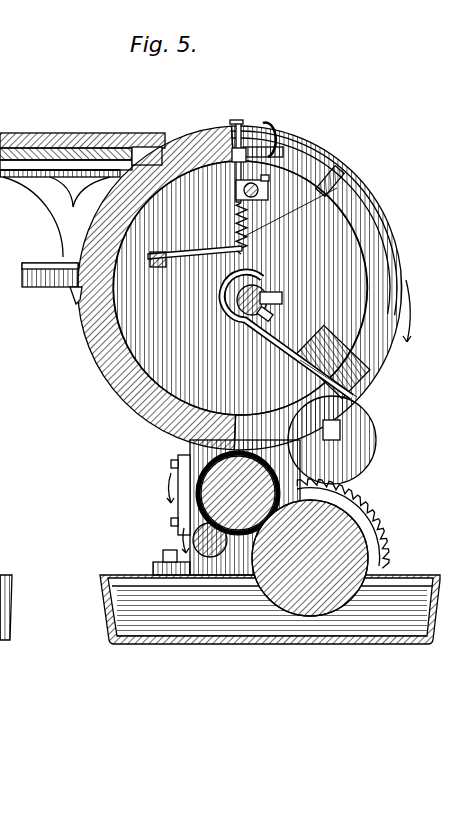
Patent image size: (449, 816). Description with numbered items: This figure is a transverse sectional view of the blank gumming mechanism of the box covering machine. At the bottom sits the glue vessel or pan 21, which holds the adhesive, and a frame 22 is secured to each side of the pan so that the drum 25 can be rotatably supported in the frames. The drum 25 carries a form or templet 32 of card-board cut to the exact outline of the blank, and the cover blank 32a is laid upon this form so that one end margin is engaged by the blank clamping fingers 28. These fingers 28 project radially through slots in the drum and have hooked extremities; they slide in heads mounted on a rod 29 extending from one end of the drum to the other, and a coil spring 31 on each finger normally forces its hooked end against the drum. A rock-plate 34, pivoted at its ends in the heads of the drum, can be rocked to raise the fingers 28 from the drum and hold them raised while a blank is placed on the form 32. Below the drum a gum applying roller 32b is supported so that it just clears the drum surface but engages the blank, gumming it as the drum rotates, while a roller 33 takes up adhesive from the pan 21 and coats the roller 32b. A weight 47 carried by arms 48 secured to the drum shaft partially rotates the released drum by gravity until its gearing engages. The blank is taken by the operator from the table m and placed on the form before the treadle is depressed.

The table m is at (82, 187).
The blank clamping fingers 28 is at (234, 125).
The rod 29 is at (293, 150).
The coil spring 31 is at (337, 188).
The cover blank 32a is at (60, 290).
The form or templet 32 is at (78, 303).
The rock-plate 34 is at (112, 309).
The drum 25 is at (118, 343).
The weight 47 is at (380, 370).
The arms 48 is at (357, 395).
The gum applying roller 32b is at (330, 494).
The roller 33 is at (353, 547).
The frame 22 is at (200, 518).
The glue vessel or pan 21 is at (124, 581).